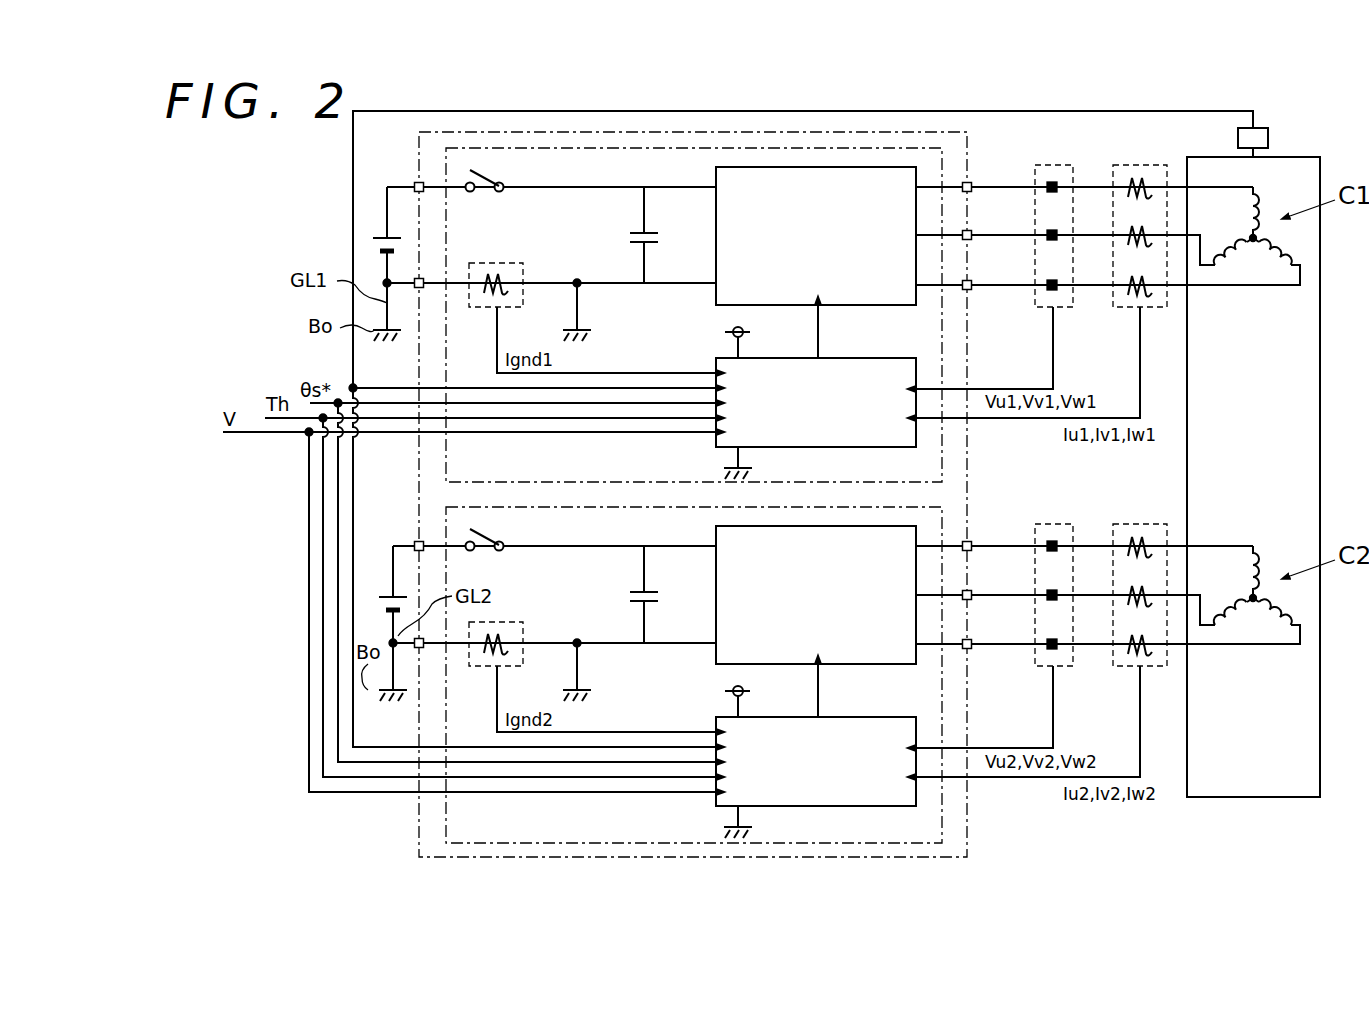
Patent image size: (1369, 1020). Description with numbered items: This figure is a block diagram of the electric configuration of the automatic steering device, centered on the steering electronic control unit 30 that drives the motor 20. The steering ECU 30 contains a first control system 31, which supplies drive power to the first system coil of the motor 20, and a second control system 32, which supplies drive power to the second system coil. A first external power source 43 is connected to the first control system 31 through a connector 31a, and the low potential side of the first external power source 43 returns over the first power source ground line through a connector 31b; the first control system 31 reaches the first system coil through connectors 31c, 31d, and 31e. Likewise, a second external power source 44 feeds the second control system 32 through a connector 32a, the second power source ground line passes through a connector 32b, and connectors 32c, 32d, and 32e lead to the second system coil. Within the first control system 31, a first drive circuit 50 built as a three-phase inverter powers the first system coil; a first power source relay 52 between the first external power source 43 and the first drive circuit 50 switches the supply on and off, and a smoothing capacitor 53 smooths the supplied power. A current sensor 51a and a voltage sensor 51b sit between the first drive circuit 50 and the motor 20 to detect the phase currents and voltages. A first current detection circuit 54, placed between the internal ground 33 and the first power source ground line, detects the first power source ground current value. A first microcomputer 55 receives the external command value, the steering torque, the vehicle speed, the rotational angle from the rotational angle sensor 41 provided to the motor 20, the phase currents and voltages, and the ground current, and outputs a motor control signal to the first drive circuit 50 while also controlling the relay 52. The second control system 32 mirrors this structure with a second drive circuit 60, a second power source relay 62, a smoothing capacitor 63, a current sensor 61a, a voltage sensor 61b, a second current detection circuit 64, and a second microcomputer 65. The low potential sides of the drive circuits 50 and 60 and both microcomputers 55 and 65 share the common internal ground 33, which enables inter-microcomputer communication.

The motor 20 is at (1318, 472).
The steering electronic control unit 30 is at (967, 132).
The first control system 31 is at (942, 482).
The second control system 32 is at (942, 507).
The connector 31a is at (417, 183).
The connector 31b is at (425, 290).
The connector 31c is at (970, 185).
The connector 31d is at (970, 234).
The connector 31e is at (970, 284).
The connector 32a is at (417, 538).
The connector 32b is at (425, 652).
The connector 32c is at (970, 544).
The connector 32d is at (970, 594).
The connector 32e is at (970, 644).
The internal ground 33 is at (584, 332).
The rotational angle sensor 41 is at (1270, 140).
The first external power source 43 is at (387, 232).
The second external power source 44 is at (391, 592).
The first drive circuit 50 is at (716, 217).
The current sensor 51a is at (1132, 165).
The voltage sensor 51b is at (1049, 165).
The first power source relay 52 is at (478, 172).
The smoothing capacitor 53 is at (630, 235).
The first current detection circuit 54 is at (494, 264).
The first microcomputer 55 is at (876, 358).
The second drive circuit 60 is at (716, 575).
The current sensor 61a is at (1136, 524).
The voltage sensor 61b is at (1044, 524).
The second power source relay 62 is at (478, 531).
The smoothing capacitor 63 is at (630, 593).
The second current detection circuit 64 is at (494, 623).
The second microcomputer 65 is at (876, 717).